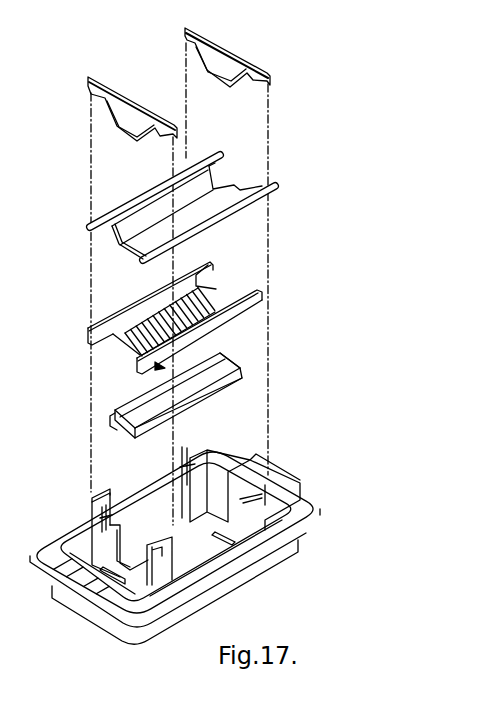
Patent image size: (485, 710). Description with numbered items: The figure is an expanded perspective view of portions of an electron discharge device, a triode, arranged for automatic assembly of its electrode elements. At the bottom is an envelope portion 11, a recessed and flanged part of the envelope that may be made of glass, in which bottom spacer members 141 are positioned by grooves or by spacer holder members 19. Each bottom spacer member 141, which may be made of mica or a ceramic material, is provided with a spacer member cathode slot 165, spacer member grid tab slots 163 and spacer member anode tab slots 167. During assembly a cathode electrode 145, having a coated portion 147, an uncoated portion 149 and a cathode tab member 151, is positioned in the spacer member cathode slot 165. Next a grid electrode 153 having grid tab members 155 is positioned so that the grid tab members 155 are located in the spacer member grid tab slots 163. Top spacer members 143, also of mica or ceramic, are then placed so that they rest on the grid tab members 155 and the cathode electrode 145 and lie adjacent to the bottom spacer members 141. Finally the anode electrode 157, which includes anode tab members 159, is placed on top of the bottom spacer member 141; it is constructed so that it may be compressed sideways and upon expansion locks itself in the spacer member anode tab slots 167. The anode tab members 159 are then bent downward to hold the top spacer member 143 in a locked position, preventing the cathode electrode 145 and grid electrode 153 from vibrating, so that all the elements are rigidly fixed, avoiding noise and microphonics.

The envelope portion 11 is at (268, 570).
The spacer holder member 19 is at (106, 578).
The bottom spacer member 141 is at (92, 505).
The top spacer member 143 is at (117, 108).
The cathode electrode 145 is at (250, 413).
The coated portion 147 is at (178, 395).
The uncoated portion 149 is at (233, 365).
The cathode tab member 151 is at (110, 425).
The grid electrode 153 is at (217, 335).
The grid tab member 155 is at (203, 275).
The anode electrode 157 is at (213, 224).
The anode tab member 159 is at (217, 157).
The spacer member grid tab slot 163 is at (152, 555).
The spacer member cathode slot 165 is at (123, 548).
The spacer member anode tab slot 167 is at (112, 520).